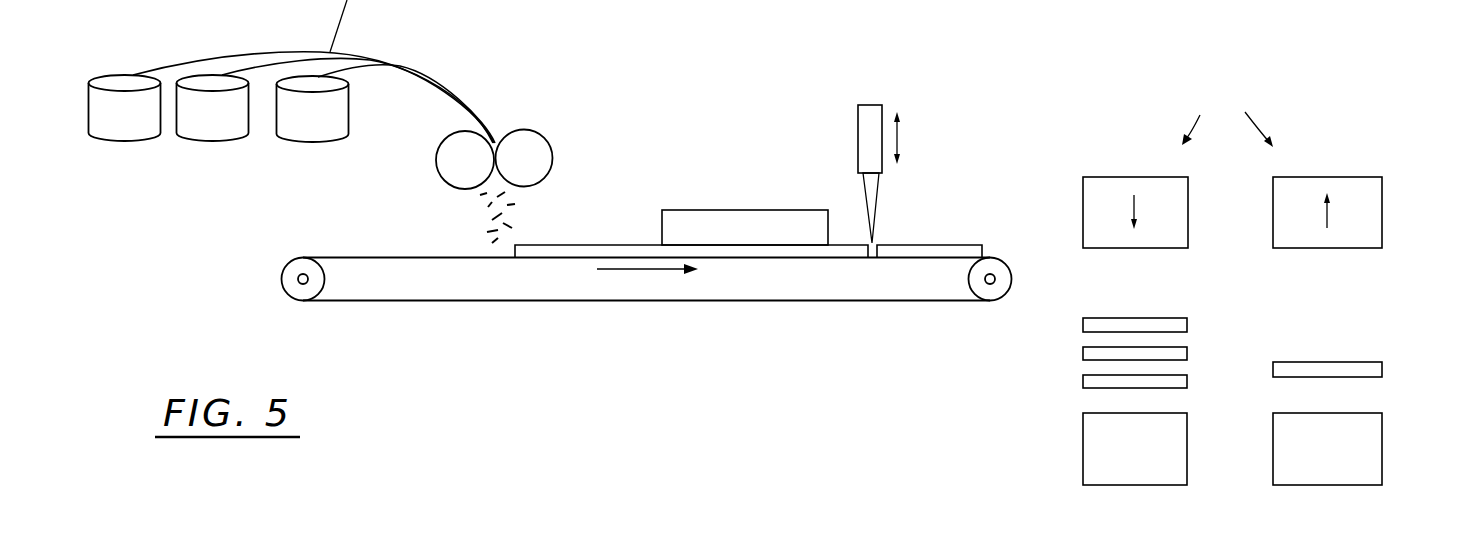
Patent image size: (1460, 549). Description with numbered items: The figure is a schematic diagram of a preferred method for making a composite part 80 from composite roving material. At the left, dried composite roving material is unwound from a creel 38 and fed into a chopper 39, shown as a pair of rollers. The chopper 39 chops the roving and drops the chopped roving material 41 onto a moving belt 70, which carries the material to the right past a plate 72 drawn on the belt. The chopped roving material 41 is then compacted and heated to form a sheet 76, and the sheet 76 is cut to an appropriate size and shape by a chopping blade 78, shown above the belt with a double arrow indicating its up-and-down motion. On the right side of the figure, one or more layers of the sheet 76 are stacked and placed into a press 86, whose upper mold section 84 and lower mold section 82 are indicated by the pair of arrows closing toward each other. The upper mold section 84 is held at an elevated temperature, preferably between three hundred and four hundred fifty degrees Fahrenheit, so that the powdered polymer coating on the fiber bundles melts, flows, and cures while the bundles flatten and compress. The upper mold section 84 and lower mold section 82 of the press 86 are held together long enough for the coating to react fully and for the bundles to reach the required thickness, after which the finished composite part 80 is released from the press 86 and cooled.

The creel 38 is at (283, 128).
The chopper 39 is at (541, 130).
The chopped roving material 41 is at (482, 218).
The moving belt 70 is at (416, 302).
The carrier plate 72 is at (587, 245).
The sheet 76 is at (749, 216).
The chopping blade 78 is at (860, 120).
The composite part 80 is at (1352, 360).
The lower mold section 82 is at (1183, 440).
The upper mold section 84 is at (1097, 180).
The press 86 is at (1227, 118).